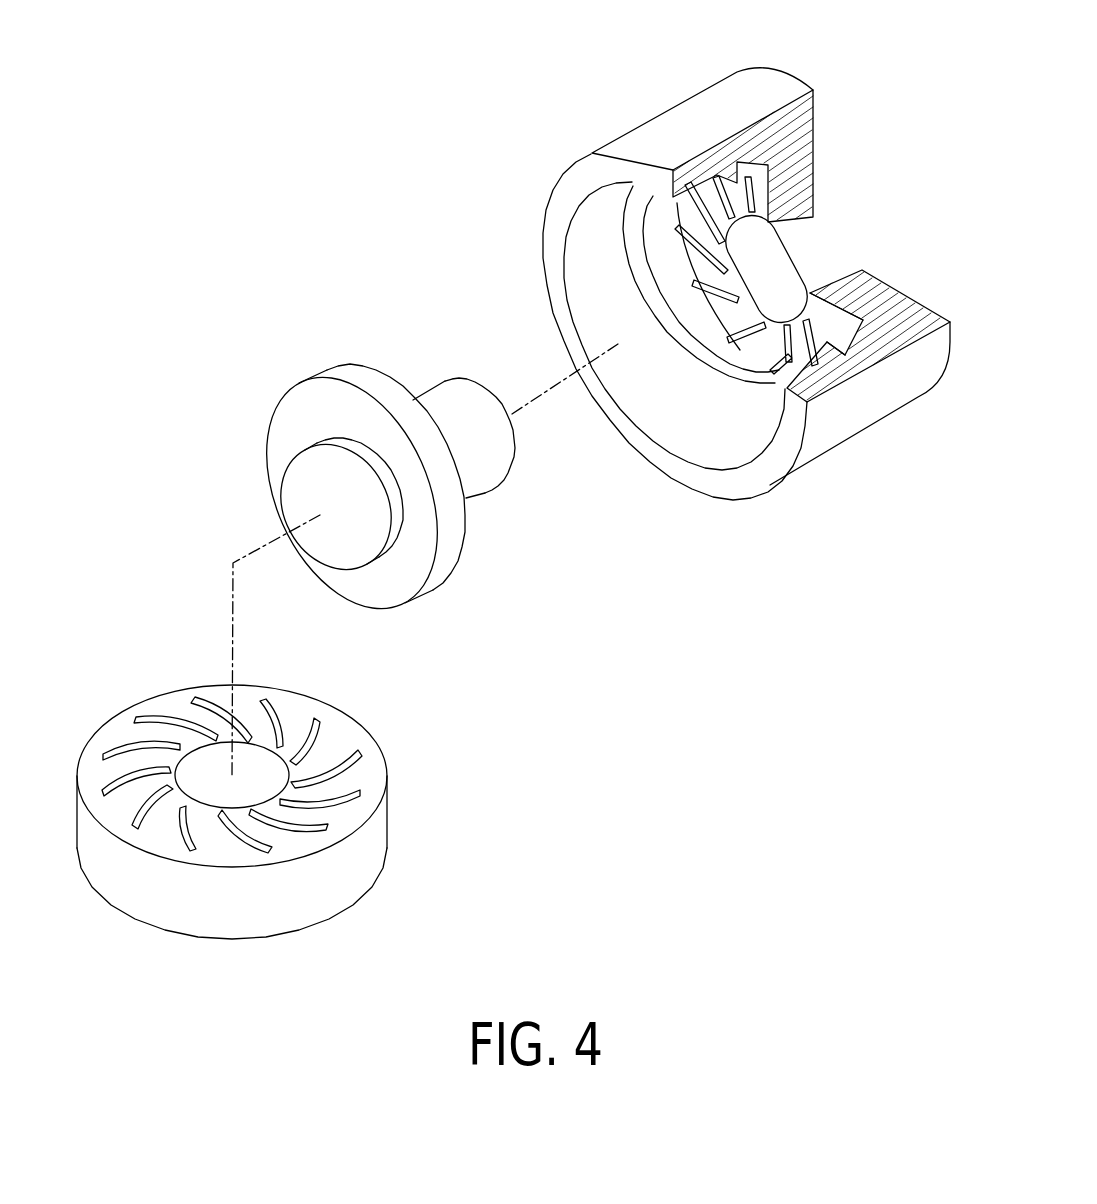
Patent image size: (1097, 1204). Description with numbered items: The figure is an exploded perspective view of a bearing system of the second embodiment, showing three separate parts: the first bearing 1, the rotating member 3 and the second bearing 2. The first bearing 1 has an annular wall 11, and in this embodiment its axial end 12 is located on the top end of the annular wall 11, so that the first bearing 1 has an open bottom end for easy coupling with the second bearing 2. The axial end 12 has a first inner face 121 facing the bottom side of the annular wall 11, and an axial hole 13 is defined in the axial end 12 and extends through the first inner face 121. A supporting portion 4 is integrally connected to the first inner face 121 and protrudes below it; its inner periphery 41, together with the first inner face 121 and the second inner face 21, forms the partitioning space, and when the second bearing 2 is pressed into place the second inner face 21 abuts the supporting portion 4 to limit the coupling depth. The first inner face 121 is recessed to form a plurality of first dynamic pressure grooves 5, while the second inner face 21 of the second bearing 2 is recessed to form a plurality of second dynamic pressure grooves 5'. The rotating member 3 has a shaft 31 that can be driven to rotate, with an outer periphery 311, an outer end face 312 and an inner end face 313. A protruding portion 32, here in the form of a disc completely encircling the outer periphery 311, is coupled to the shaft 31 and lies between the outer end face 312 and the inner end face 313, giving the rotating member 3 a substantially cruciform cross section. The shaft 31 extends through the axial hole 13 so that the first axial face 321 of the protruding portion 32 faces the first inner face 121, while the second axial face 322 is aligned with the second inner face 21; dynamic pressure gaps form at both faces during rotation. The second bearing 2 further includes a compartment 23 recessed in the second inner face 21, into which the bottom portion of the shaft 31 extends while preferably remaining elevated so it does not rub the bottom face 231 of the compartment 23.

The first bearing 1 is at (651, 84).
The annular wall 11 is at (733, 480).
The axial end 12 is at (803, 172).
The first inner face 121 is at (812, 340).
The axial hole 13 is at (760, 268).
The supporting portion 4 is at (643, 292).
The inner periphery 41 is at (667, 243).
The first dynamic pressure grooves 5 is at (687, 230).
The rotating member 3 is at (373, 270).
The shaft 31 is at (347, 426).
The outer periphery 311 is at (332, 460).
The outer end face 312 is at (512, 425).
The inner end face 313 is at (298, 495).
The protruding portion 32 is at (282, 356).
The first axial face 321 is at (477, 522).
The second axial face 322 is at (410, 570).
The second bearing 2 is at (353, 867).
The second inner face 21 is at (357, 783).
The compartment 23 is at (279, 770).
The bottom face 231 is at (217, 797).
The second dynamic pressure grooves 5' is at (289, 775).